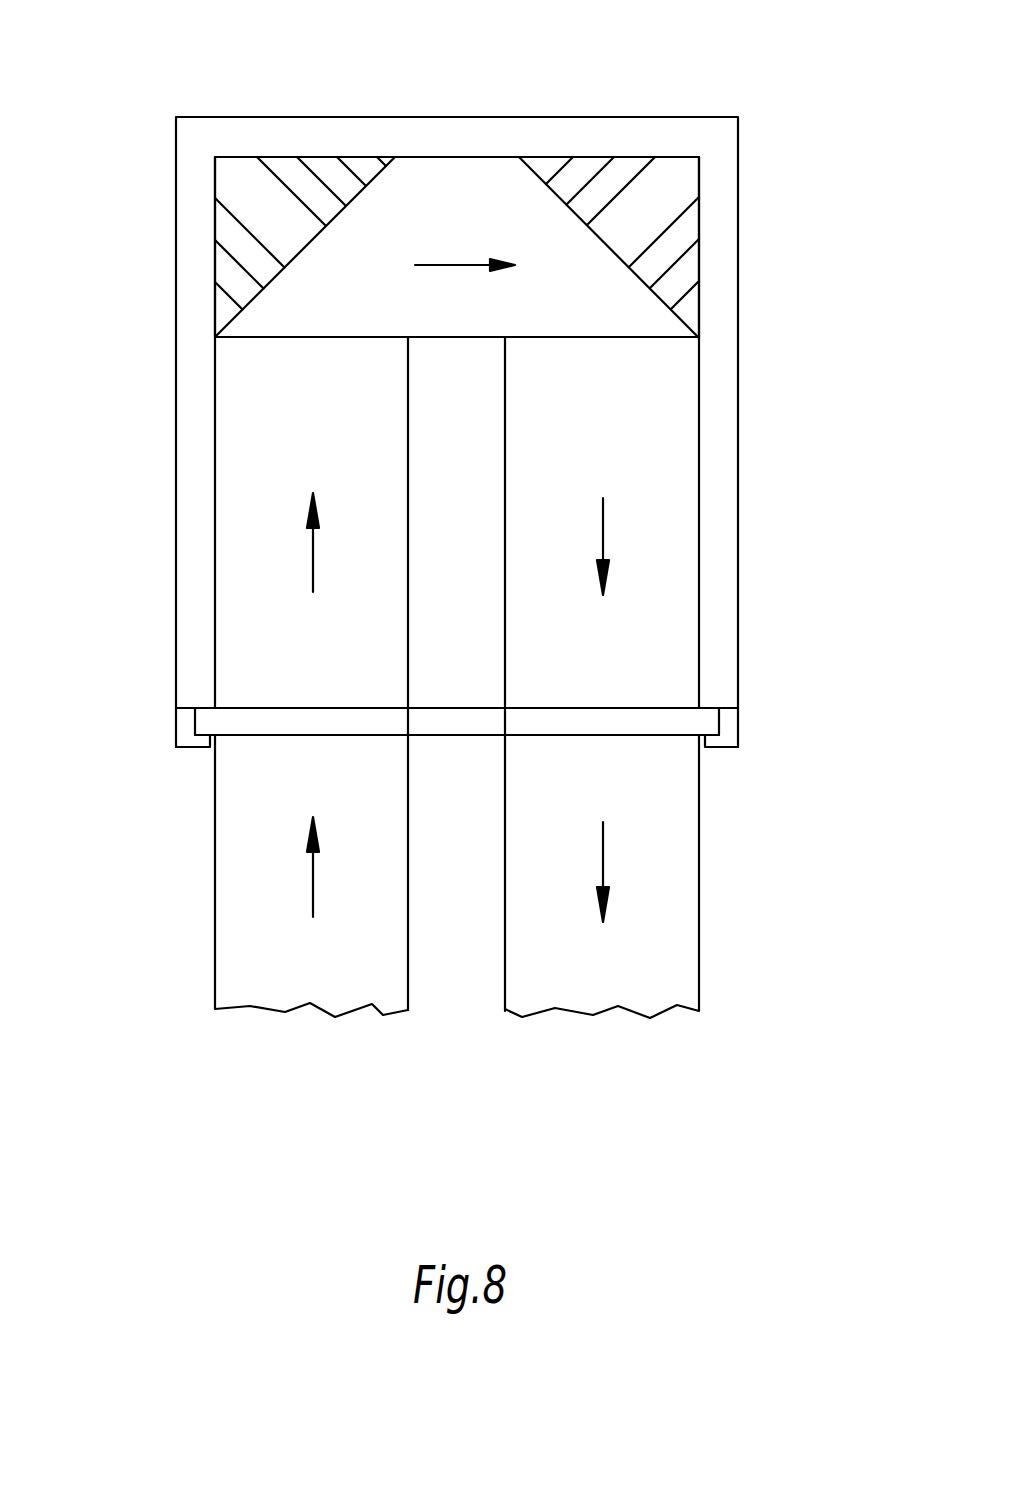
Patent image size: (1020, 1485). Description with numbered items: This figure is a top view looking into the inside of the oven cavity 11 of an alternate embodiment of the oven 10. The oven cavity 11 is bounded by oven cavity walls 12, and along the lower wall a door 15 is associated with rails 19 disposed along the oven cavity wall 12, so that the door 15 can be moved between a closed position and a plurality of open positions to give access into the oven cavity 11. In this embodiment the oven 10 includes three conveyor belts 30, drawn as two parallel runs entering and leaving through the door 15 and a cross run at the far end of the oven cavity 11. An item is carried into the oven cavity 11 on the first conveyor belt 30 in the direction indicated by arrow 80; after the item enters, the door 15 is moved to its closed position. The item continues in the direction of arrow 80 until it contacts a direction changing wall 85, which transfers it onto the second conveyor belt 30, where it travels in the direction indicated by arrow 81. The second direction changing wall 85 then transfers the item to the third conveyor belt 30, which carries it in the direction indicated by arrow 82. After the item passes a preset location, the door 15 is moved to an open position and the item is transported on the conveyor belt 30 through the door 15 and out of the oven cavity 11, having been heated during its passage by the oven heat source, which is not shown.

The oven 10 is at (737, 63).
The oven cavity 11 is at (176, 157).
The oven cavity walls 12 is at (367, 128).
The door 15 is at (661, 716).
The rail 19 is at (185, 726).
The conveyor belt 30 is at (470, 170).
The arrow 80 is at (330, 705).
The arrow 81 is at (465, 249).
The arrow 82 is at (583, 710).
The direction changing wall 85 is at (290, 175).